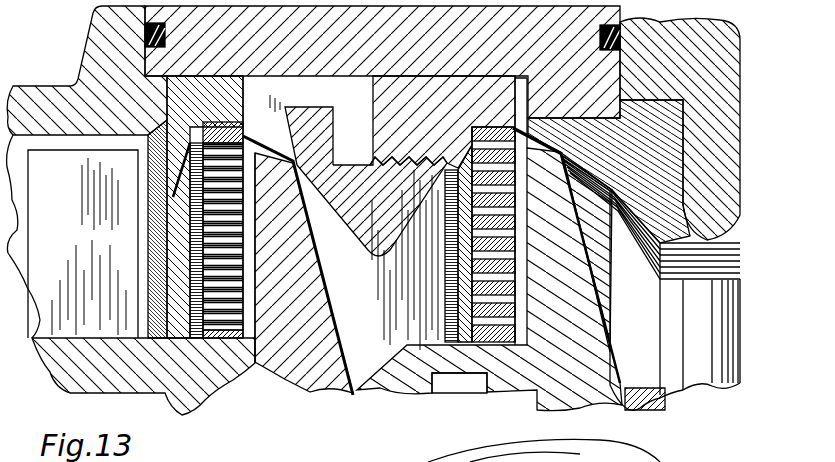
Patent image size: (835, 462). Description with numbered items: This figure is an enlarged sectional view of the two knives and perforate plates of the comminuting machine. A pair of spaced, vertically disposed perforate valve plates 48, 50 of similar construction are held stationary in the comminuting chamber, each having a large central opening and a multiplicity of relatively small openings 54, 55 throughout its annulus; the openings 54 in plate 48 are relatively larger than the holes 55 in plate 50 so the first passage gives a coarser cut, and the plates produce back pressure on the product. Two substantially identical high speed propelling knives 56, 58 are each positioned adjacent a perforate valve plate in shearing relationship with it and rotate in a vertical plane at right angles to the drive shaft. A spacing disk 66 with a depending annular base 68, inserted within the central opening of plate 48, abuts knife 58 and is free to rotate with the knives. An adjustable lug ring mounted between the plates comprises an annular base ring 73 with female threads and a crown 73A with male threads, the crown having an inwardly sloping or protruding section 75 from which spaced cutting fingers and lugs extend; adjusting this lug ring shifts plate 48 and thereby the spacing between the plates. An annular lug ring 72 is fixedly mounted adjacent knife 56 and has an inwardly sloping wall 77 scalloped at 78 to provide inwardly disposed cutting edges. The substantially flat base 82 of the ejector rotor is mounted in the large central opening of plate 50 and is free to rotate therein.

The perforate valve plate 48 is at (487, 126).
The perforate valve plate 50 is at (210, 121).
The small openings 54 is at (521, 296).
The holes 55 is at (232, 297).
The high speed propelling knife 56 is at (597, 278).
The high speed propelling knife 58 is at (328, 287).
The spacing disk 66 is at (371, 366).
The annular base 68 is at (487, 380).
The annular lug ring 72 is at (652, 121).
The annular base ring 73 is at (463, 96).
The crown 73A is at (296, 114).
The inwardly sloping section 75 is at (360, 215).
The inwardly sloping wall 77 is at (645, 228).
The scallops 78 is at (541, 140).
The flat base 82 is at (217, 381).